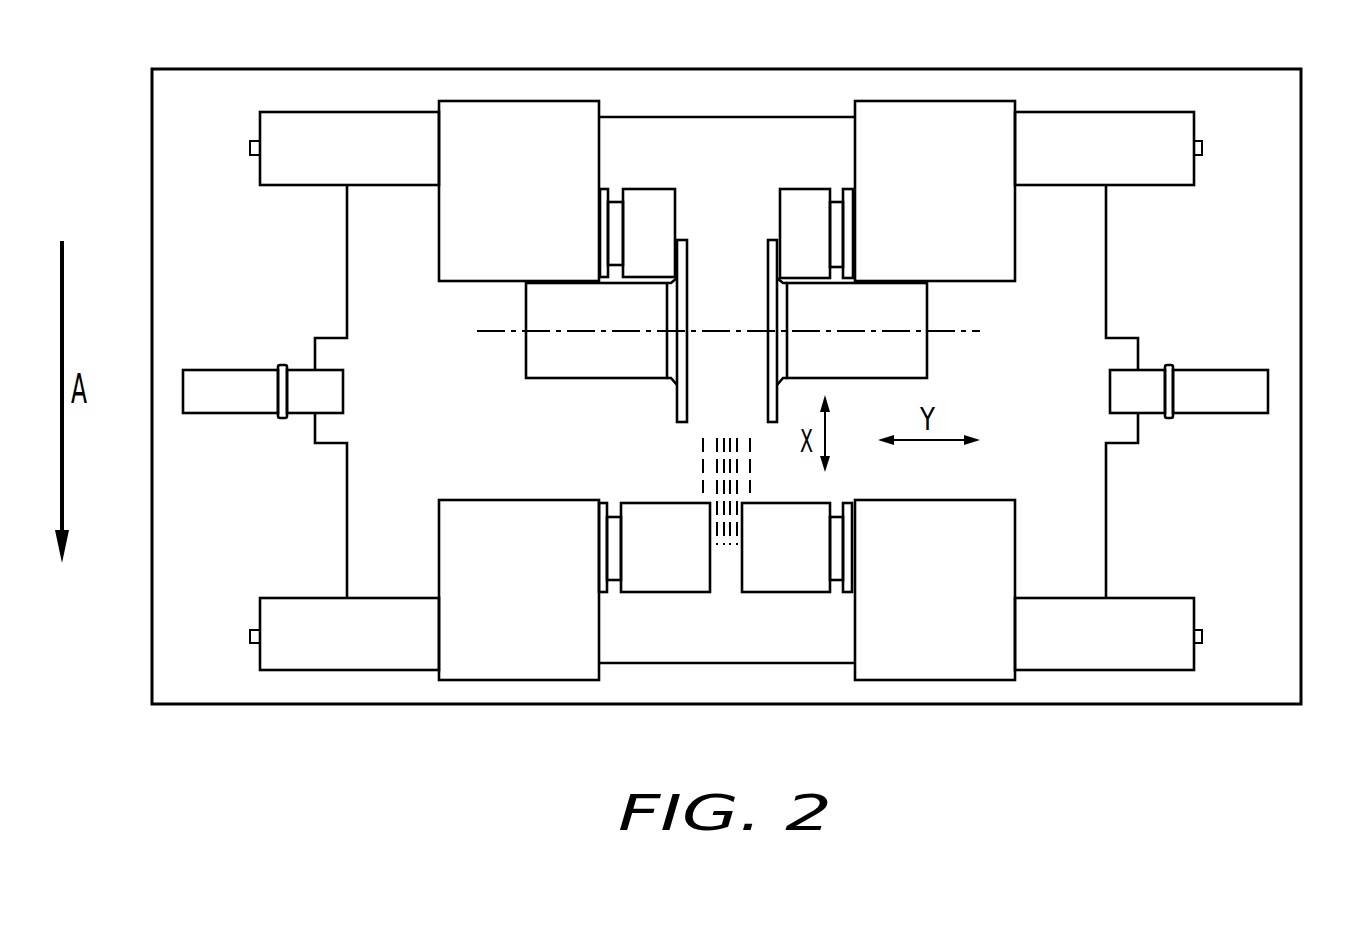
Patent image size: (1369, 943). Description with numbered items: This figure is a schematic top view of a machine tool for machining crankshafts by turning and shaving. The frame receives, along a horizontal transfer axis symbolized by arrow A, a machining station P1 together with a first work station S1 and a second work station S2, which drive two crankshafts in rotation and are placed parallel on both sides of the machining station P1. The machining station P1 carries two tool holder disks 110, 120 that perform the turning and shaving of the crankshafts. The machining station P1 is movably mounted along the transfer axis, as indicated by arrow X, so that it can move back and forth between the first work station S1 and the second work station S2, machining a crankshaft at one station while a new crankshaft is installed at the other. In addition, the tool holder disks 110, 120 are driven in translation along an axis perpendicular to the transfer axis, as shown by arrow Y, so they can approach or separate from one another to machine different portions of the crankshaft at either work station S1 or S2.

The tool holder disk 110 is at (685, 262).
The tool holder disk 120 is at (763, 262).
The first work station S1 is at (1262, 148).
The second work station S2 is at (1251, 596).
The machining station P1 is at (945, 342).